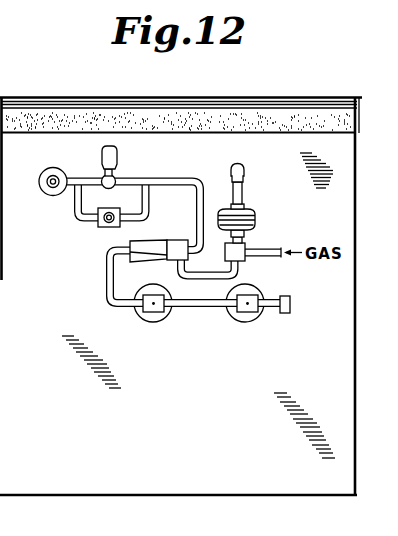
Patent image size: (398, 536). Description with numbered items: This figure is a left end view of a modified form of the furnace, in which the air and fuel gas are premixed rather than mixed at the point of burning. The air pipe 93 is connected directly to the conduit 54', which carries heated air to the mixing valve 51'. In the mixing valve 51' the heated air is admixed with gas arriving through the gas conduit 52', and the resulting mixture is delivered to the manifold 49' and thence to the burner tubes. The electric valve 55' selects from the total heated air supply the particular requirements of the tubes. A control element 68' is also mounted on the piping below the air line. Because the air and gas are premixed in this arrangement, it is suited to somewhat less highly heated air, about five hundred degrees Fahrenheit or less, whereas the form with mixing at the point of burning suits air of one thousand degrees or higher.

The air pipe 93 is at (55, 175).
The conduit 54' is at (42, 197).
The electric valve 55' is at (135, 165).
The control element 68' is at (99, 221).
The mixing valve 51' is at (159, 239).
The conduit 52' is at (241, 220).
The manifold 49' is at (200, 304).